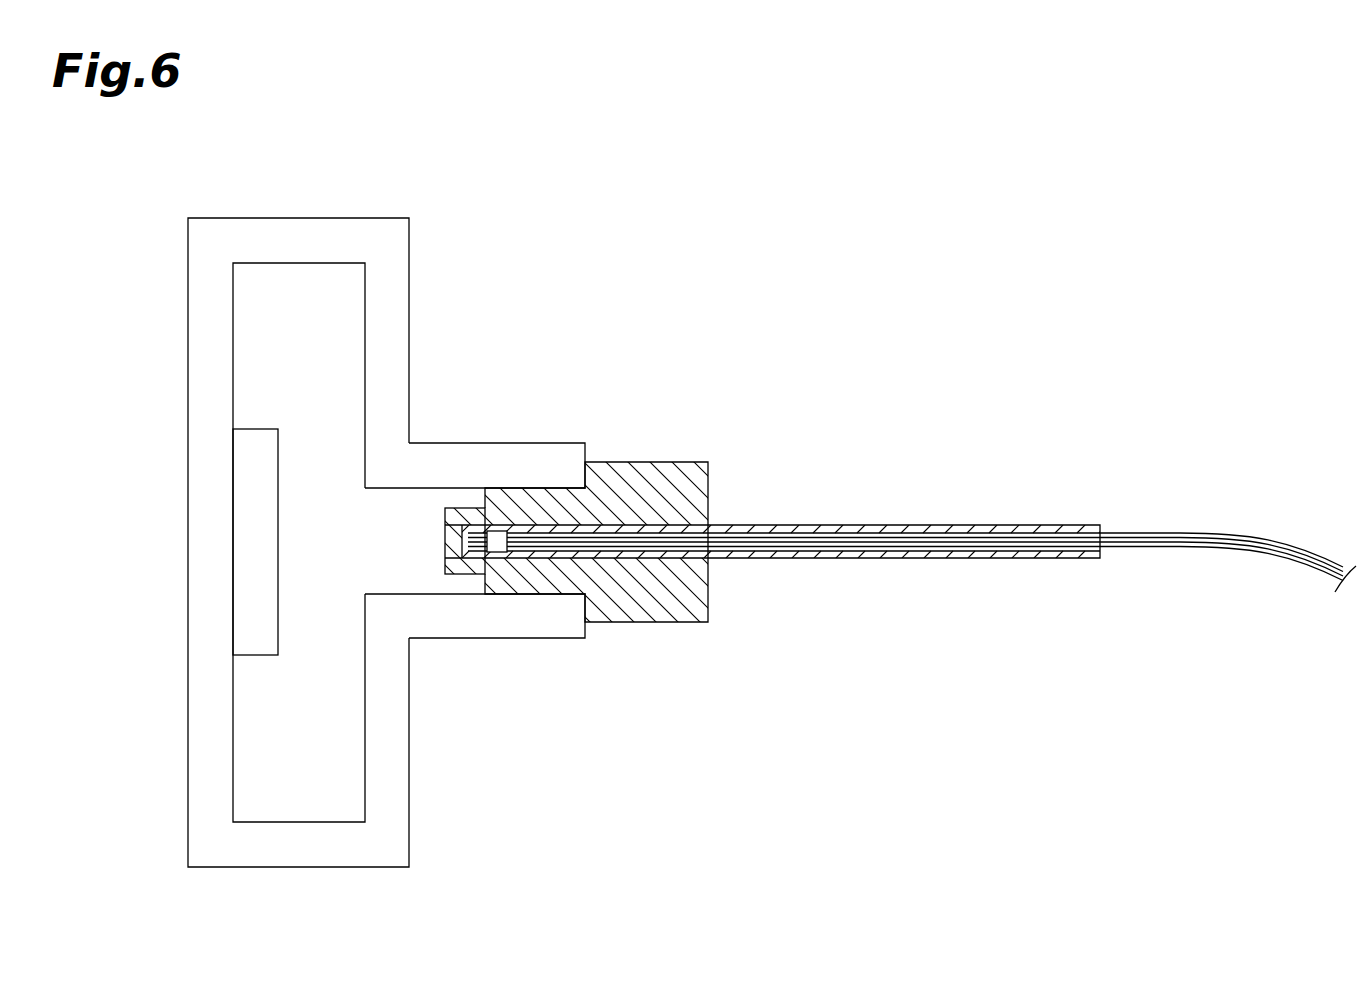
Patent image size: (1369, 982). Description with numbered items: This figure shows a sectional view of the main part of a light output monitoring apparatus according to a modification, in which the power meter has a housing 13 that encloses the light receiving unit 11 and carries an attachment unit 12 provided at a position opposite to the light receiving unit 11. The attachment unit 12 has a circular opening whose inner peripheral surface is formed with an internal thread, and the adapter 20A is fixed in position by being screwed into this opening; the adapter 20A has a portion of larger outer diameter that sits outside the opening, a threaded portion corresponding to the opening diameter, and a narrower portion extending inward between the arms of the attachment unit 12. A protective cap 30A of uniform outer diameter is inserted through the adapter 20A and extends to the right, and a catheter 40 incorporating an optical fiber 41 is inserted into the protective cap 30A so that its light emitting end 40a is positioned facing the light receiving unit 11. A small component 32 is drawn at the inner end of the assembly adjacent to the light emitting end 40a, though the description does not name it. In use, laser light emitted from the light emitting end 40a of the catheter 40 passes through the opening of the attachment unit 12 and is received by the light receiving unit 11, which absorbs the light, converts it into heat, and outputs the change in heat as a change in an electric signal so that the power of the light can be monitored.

The light receiving unit 11 is at (245, 497).
The attachment unit 12 is at (470, 455).
The housing 13 is at (198, 255).
The adapter 20A is at (661, 618).
The protective cap 30A is at (888, 563).
The connector block 32 is at (452, 538).
The catheter 40 is at (1275, 543).
The light emitting end 40a is at (500, 556).
The optical fiber 41 is at (1245, 553).